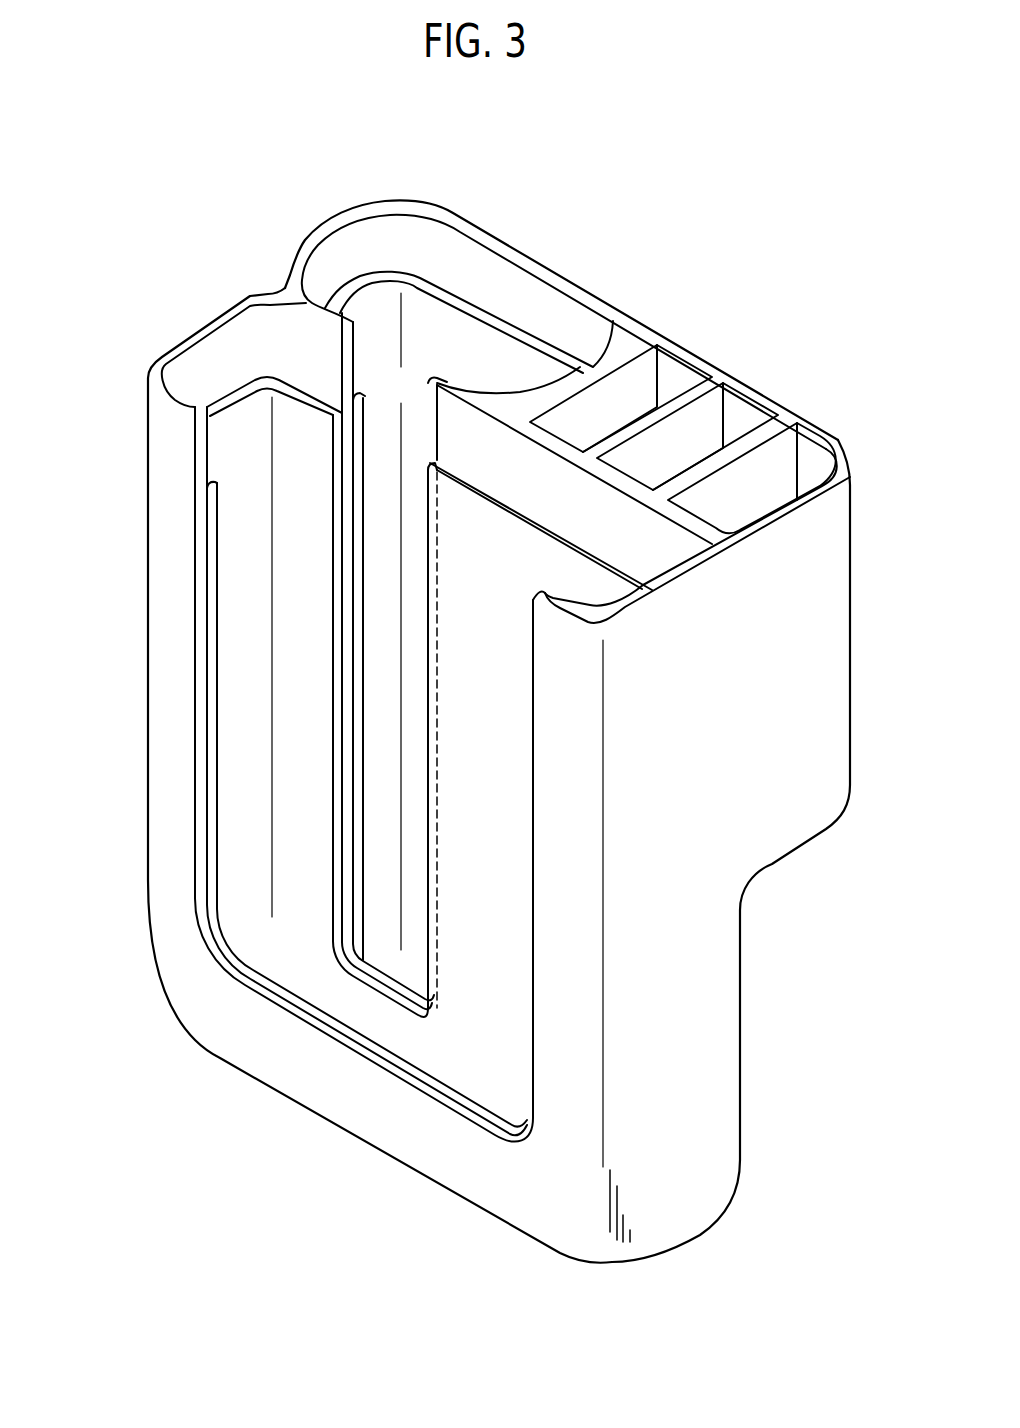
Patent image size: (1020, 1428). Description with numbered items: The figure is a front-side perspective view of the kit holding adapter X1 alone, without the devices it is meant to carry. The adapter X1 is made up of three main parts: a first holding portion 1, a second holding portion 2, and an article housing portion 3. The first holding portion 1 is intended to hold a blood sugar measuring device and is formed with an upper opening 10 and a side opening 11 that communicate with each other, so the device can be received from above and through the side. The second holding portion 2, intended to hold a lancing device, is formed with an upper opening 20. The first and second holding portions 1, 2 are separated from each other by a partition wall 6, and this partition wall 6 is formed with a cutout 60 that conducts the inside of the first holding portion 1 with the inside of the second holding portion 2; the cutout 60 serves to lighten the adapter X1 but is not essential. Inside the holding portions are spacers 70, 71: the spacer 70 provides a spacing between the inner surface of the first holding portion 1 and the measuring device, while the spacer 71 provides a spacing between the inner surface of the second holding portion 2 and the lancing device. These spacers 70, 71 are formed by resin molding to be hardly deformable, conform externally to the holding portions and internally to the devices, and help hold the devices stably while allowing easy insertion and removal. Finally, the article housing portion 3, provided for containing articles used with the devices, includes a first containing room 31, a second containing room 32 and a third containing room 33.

The first holding portion 1 is at (147, 649).
The second holding portion 2 is at (435, 201).
The article housing portion 3 is at (850, 622).
The partition wall 6 is at (313, 300).
The upper opening 10 is at (207, 340).
The side opening 11 is at (207, 840).
The upper opening 20 is at (497, 260).
The first containing room 31 is at (687, 372).
The second containing room 32 is at (757, 410).
The third containing room 33 is at (822, 447).
The cutout 60 is at (347, 690).
The spacer 70 is at (477, 528).
The spacer 71 is at (492, 347).
The kit holding adapter X1 is at (728, 272).